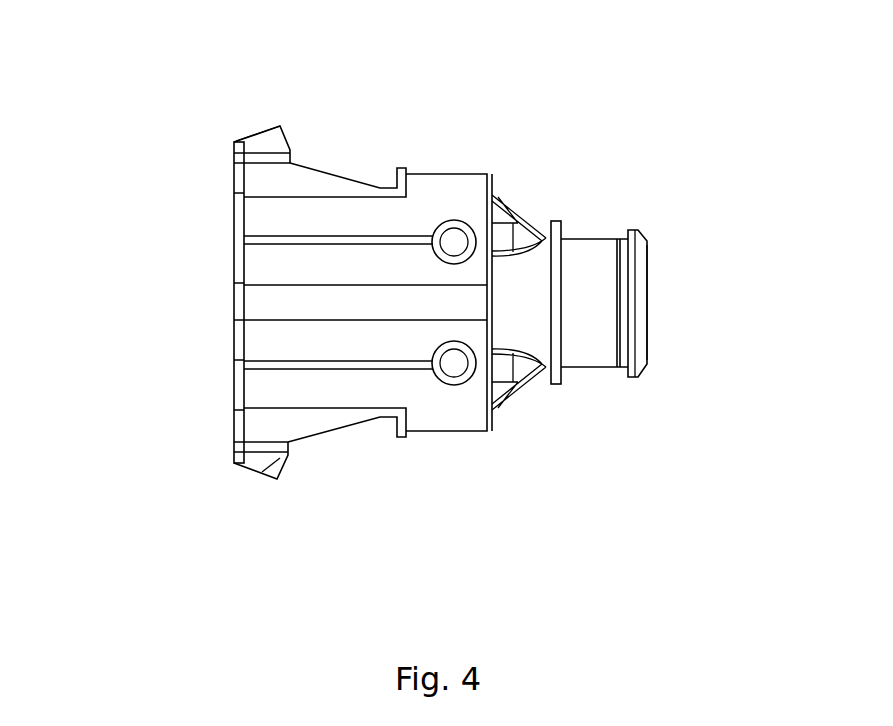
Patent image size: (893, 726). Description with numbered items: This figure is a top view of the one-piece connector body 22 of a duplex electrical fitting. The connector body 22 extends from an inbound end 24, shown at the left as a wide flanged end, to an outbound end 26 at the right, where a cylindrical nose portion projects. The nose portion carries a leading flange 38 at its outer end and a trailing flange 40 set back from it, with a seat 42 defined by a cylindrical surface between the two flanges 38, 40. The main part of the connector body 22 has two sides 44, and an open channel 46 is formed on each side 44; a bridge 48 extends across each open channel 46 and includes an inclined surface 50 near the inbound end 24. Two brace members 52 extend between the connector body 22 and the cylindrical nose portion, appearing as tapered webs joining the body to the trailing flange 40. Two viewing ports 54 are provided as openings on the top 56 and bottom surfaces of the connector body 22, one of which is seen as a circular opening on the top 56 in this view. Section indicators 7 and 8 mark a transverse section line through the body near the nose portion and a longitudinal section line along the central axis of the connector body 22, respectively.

The connector body 22 is at (138, 157).
The inbound end 24 is at (235, 283).
The outbound end 26 is at (648, 277).
The leading flange 38 is at (637, 228).
The trailing flange 40 is at (555, 220).
The seat 42 is at (587, 368).
The side 44 is at (445, 173).
The open channel 46 is at (335, 177).
The bridge 48 is at (267, 147).
The inclined surface 50 is at (268, 127).
The brace member 52 is at (500, 400).
The viewing port 54 is at (455, 240).
The top surface 56 is at (378, 279).
The section line 7- 7 is at (482, 516).
The section line 8- 8 is at (720, 302).